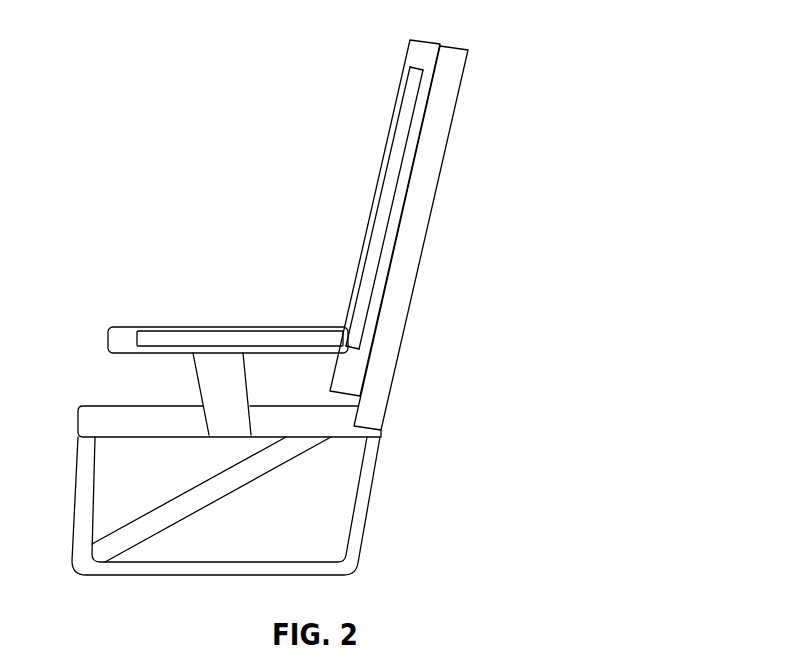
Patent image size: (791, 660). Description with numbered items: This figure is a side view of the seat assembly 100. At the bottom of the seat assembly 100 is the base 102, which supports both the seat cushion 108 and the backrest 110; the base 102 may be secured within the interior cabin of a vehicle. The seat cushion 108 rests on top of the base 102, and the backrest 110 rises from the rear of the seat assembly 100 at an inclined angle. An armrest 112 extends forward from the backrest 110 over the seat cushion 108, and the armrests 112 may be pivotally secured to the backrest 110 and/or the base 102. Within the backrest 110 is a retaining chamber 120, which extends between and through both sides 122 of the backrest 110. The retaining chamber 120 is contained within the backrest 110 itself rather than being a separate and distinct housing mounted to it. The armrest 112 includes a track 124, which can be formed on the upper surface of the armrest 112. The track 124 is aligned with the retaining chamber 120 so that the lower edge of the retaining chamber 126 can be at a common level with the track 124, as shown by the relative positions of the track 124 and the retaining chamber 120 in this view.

The seat assembly 100 is at (546, 89).
The base 102 is at (404, 497).
The seat cushion 108 is at (107, 406).
The backrest 110 is at (425, 163).
The armrest 112 is at (132, 325).
The retaining chamber 120 is at (381, 244).
The sides of the backrest 122 is at (423, 62).
The track 124 is at (248, 342).
The lower edge of the retaining chamber 126 is at (351, 345).